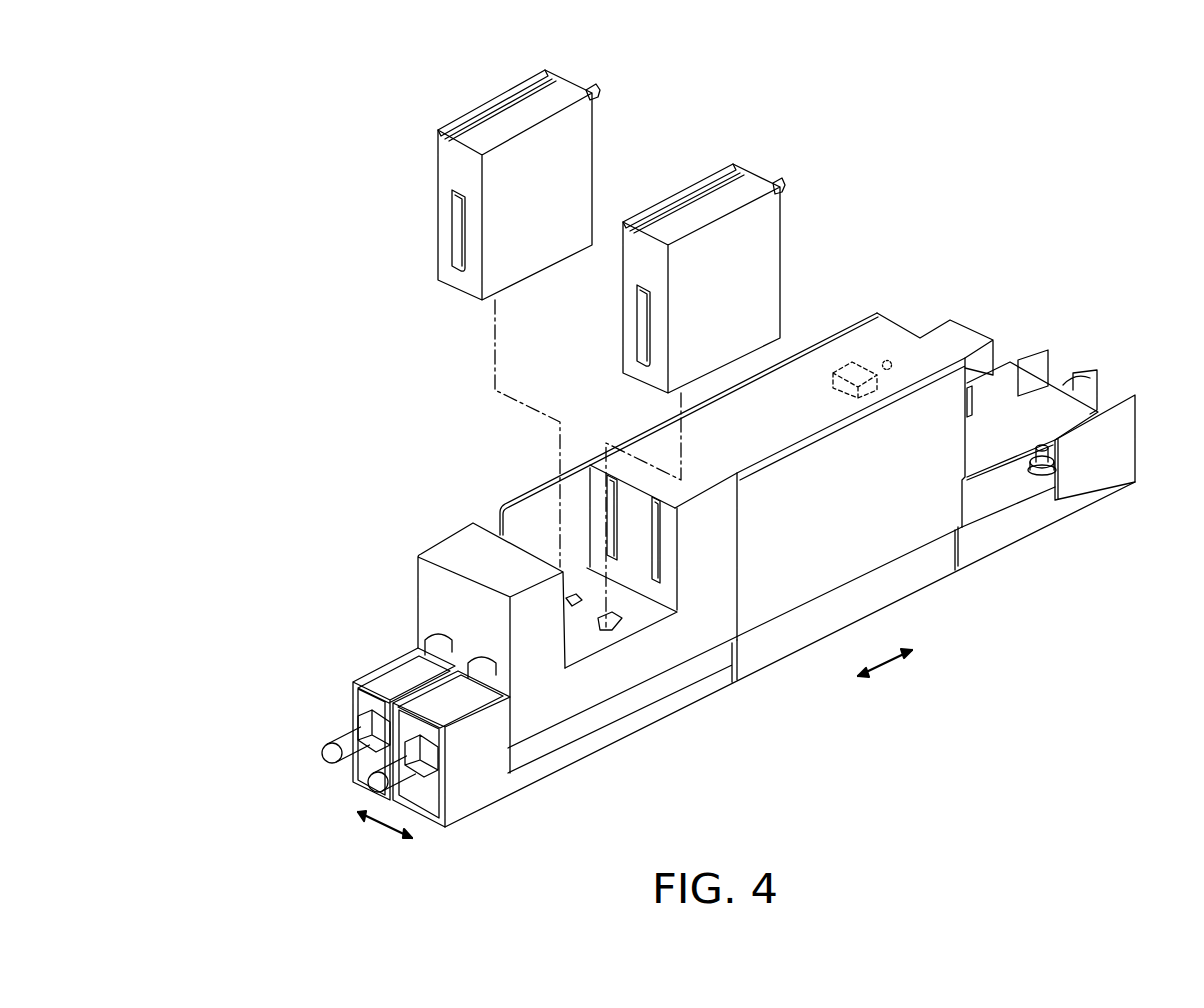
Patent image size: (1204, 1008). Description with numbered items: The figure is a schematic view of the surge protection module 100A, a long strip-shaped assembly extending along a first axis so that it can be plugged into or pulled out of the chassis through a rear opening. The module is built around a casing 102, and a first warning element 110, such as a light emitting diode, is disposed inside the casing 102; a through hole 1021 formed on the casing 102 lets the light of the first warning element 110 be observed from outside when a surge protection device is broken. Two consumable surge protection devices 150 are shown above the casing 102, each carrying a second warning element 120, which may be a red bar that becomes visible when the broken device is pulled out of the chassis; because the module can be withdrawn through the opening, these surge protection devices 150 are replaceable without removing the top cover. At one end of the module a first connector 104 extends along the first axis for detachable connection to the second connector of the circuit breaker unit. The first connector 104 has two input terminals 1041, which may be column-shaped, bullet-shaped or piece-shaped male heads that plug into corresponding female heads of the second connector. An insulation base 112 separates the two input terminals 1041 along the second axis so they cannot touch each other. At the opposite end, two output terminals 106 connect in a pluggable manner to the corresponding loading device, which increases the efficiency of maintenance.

The surge protection module 100A is at (302, 52).
The casing 102 is at (955, 336).
The through hole 1021 is at (890, 358).
The first connector 104 is at (330, 730).
The input terminals 1041 is at (378, 783).
The output terminals 106 is at (1100, 412).
The first warning element 110 is at (845, 360).
The insulation base 112 is at (501, 798).
The second warning element 120 is at (565, 84).
The surge protection device 150 is at (421, 206).